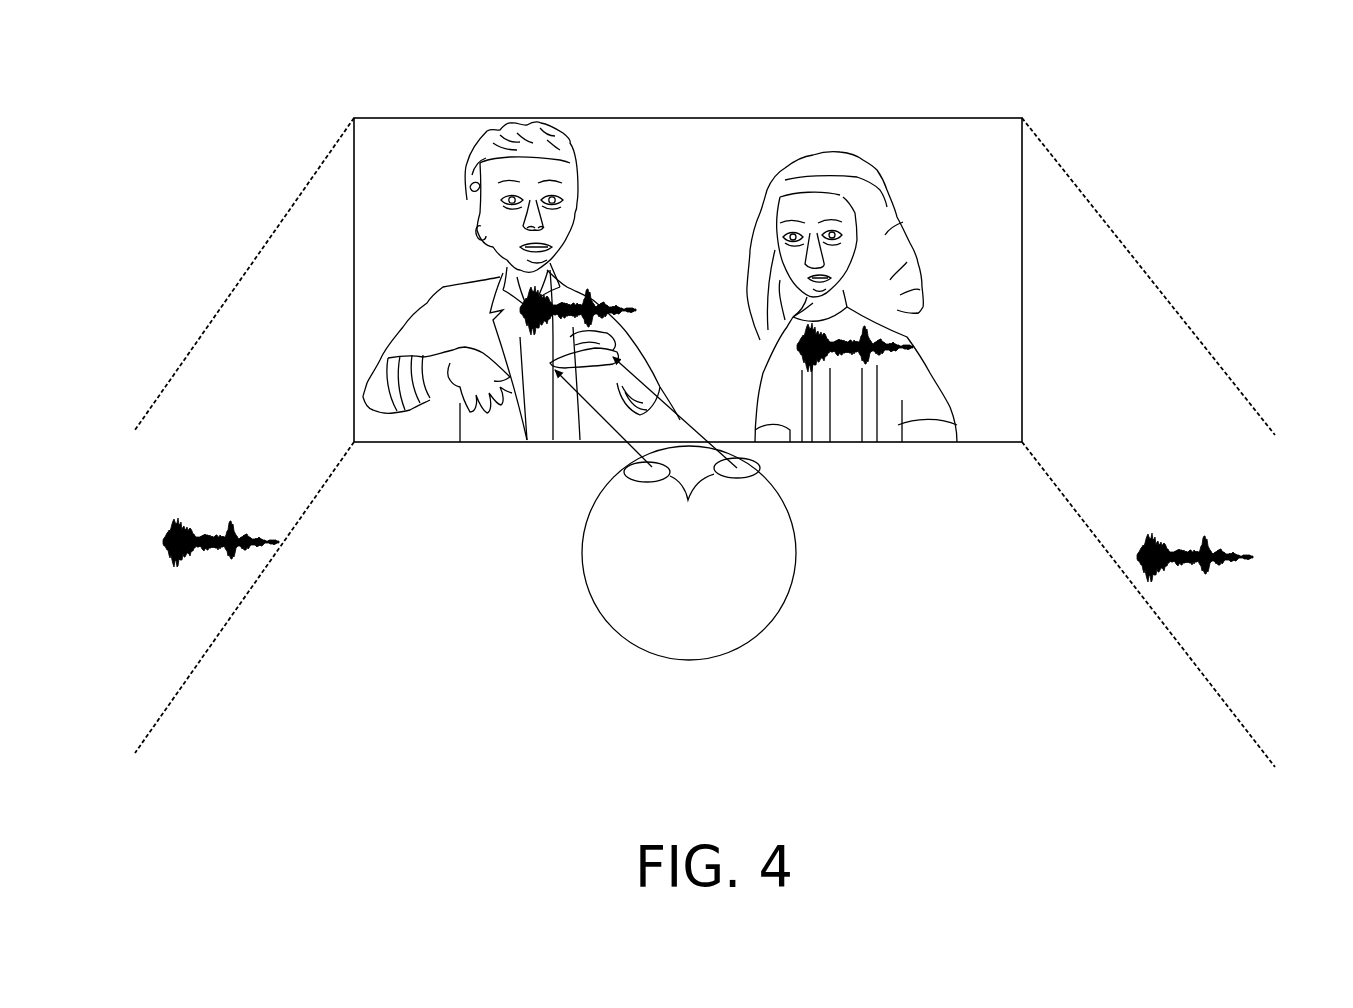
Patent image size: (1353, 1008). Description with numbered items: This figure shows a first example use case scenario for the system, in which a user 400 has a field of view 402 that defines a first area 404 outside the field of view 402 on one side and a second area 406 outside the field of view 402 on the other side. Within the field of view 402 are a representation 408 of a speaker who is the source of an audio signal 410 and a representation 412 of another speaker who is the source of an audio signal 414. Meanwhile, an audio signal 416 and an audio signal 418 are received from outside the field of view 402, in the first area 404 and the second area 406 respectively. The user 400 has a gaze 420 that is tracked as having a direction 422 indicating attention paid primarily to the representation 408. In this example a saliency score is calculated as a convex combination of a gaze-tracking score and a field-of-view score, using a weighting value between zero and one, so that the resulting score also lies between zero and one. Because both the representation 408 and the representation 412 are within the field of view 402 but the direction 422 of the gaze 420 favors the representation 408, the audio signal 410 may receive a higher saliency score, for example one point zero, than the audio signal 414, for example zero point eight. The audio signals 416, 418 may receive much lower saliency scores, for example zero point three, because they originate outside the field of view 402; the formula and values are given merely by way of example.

The user 400 is at (733, 635).
The field of view 402 is at (688, 244).
The first area outside the field of view 404 is at (244, 435).
The second area outside the field of view 406 is at (1148, 442).
The representation of a speaker 408 is at (557, 170).
The audio signal 410 is at (595, 297).
The representation of a speaker 412 is at (880, 167).
The audio signal 414 is at (905, 333).
The audio signal 416 is at (183, 582).
The audio signal 418 is at (1222, 517).
The gaze 420 is at (692, 496).
The direction 422 is at (557, 478).